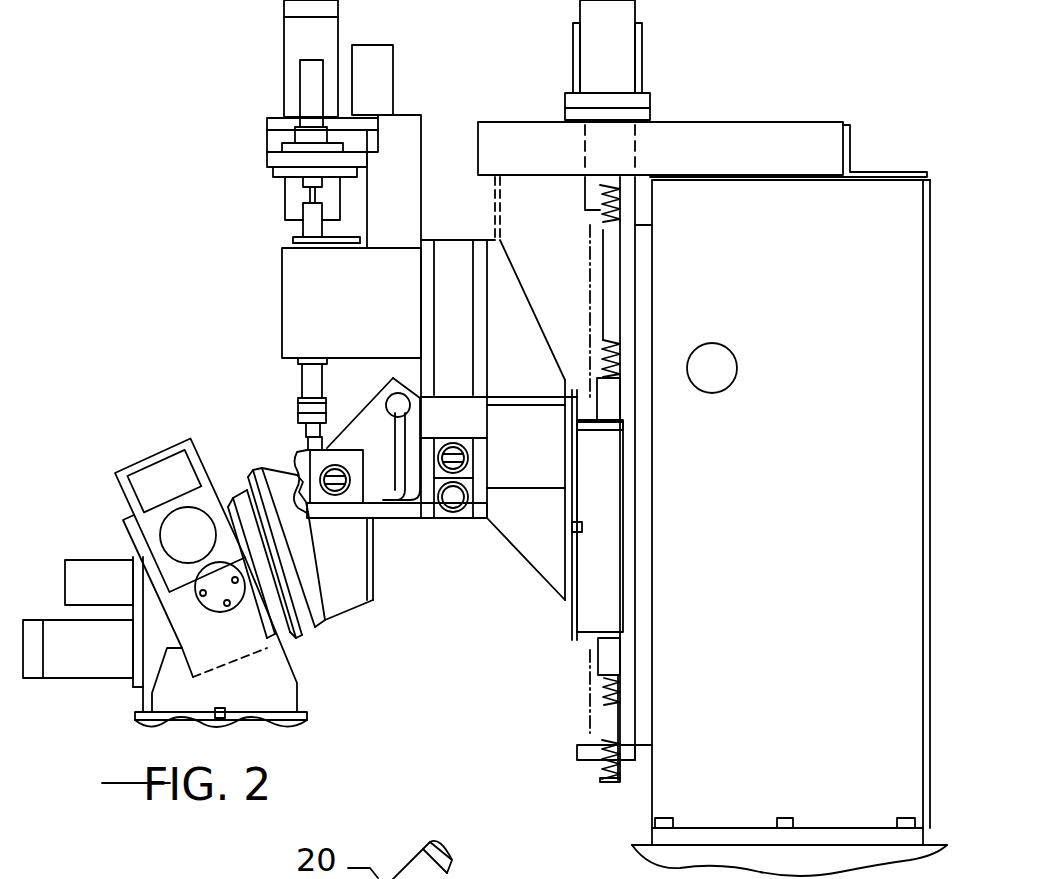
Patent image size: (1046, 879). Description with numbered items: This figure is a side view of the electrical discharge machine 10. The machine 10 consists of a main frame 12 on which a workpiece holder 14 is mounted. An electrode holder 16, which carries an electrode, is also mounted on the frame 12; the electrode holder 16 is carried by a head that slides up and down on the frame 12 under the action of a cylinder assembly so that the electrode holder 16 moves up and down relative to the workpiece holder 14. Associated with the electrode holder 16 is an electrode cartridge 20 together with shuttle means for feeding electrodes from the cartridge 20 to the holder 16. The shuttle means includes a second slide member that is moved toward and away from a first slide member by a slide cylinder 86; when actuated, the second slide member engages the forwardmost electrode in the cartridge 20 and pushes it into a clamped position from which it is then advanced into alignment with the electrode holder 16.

The electrical discharge machine 10 is at (228, 90).
The main frame 12 is at (675, 797).
The workpiece holder 14 is at (348, 588).
The electrode holder 16 is at (300, 447).
The electrode cartridge 20 is at (367, 403).
The slide cylinder 86 is at (340, 492).